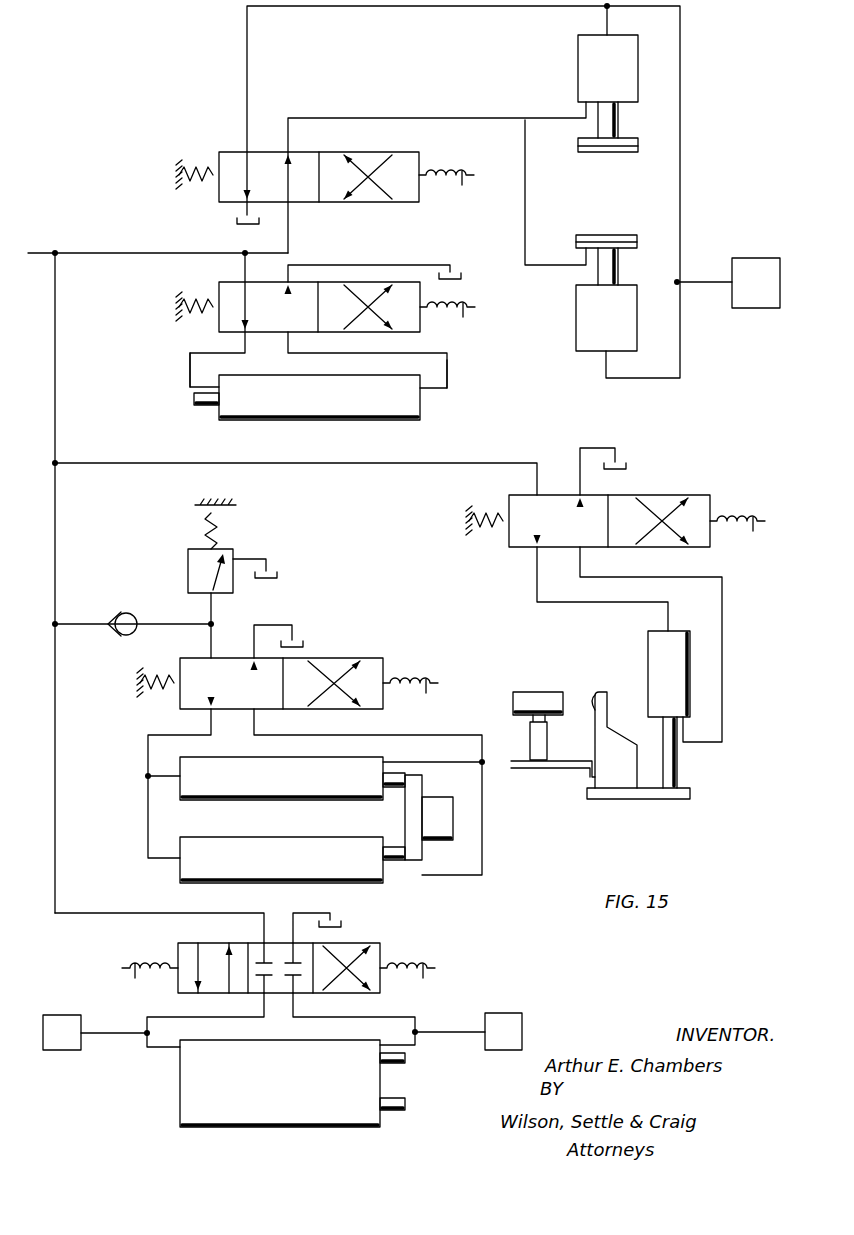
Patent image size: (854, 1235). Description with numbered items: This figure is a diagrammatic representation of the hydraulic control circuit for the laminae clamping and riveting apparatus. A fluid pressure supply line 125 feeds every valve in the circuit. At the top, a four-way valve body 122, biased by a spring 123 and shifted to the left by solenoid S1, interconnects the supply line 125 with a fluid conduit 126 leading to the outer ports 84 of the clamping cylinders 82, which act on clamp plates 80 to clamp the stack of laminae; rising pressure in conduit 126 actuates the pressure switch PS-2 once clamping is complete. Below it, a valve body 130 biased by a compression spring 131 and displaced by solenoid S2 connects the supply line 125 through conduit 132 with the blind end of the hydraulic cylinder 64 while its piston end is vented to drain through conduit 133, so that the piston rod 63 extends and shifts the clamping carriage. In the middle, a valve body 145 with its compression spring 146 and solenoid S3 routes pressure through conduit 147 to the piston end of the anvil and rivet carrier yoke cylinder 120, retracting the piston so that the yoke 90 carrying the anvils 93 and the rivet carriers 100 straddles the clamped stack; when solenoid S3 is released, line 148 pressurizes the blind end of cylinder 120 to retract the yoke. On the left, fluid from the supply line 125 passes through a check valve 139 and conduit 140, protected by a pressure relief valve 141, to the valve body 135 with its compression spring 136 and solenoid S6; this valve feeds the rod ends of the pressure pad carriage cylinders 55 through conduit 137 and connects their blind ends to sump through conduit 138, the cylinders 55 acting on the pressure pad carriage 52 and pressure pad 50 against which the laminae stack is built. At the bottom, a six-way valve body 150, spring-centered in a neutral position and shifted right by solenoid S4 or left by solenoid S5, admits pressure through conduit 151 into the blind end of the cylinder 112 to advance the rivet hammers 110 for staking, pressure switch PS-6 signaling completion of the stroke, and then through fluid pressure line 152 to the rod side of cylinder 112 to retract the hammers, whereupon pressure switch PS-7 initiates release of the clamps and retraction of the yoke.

The fluid pressure supply line 125 is at (40, 253).
The fluid conduit 126 is at (246, 2).
The four-way valve body 122 is at (366, 196).
The spring 123 is at (212, 168).
The solenoid S1 is at (446, 161).
The outer ports 84 is at (604, 20).
The clamping cylinders 82 is at (572, 58).
The clamp plate 80 is at (588, 150).
The pressure switch PS-2 is at (727, 283).
The valve body 130 is at (410, 330).
The compression spring 131 is at (200, 298).
The solenoid S2 is at (465, 315).
The conduit 133 is at (190, 355).
The conduit 132 is at (450, 374).
The hydraulic cylinders 64 is at (285, 406).
The piston rods 63 is at (206, 408).
The valve body 145 is at (662, 496).
The compression spring 146 is at (490, 512).
The solenoid S3 is at (737, 508).
The line 148 is at (535, 583).
The conduit 147 is at (724, 588).
The check valve 139 is at (120, 612).
The pressure relief valve 141 is at (190, 546).
The conduit 140 is at (214, 645).
The valve body 135 is at (345, 658).
The compression spring 136 is at (146, 672).
The solenoid S6 is at (410, 668).
The conduit 138 is at (148, 756).
The conduit 137 is at (423, 735).
The pressure pad carriage cylinders 55 is at (242, 790).
The pressure pad carriage 52 is at (415, 813).
The pressure pad 50 is at (465, 788).
The anvil and rivet carrier yoke cylinder 120 is at (653, 641).
The anvil and rivet carrier yoke 90 is at (572, 786).
The anvils 93 is at (605, 690).
The rivet carriers 100 is at (553, 680).
The six-way valve body 150 is at (168, 1000).
The solenoid S4 is at (149, 951).
The solenoid S5 is at (407, 953).
The conduit 151 is at (160, 1050).
The fluid pressure line 152 is at (418, 1026).
The pressure switch PS-6 is at (96, 1032).
The pressure switch PS-7 is at (470, 1031).
The cylinder 112 is at (280, 1092).
The rivet hammers 110 is at (408, 1063).